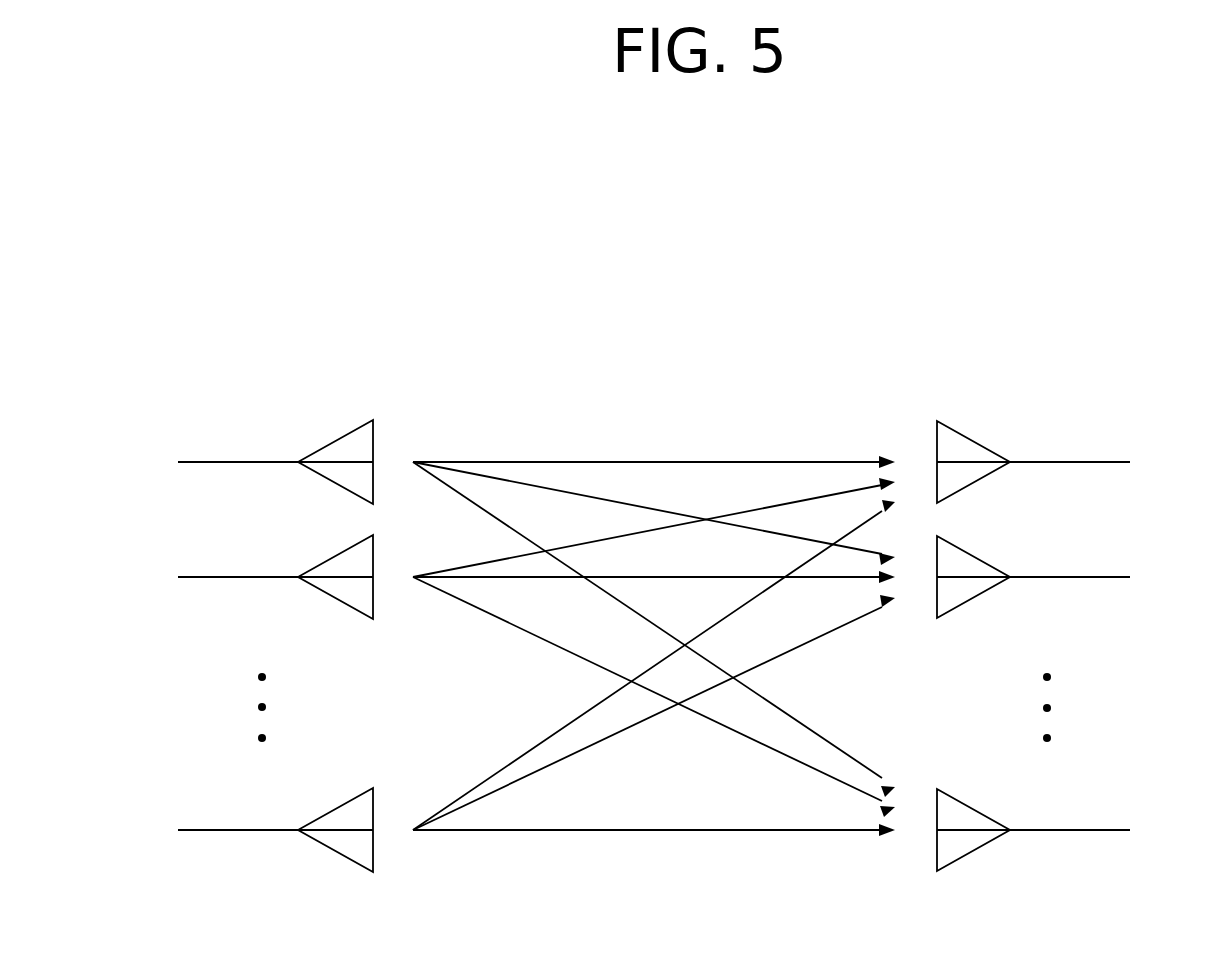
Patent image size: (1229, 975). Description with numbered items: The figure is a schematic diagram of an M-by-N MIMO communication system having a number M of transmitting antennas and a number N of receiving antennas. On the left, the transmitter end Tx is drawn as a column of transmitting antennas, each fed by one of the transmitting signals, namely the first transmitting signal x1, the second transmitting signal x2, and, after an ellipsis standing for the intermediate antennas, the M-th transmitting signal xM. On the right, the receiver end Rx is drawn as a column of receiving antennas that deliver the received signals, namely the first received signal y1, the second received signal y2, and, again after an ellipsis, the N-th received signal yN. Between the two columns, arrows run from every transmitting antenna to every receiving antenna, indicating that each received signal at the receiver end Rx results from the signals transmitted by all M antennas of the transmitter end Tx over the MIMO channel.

The transmitter end Tx is at (295, 534).
The receiver end Rx is at (1022, 534).
The first transmitting signal x1 is at (230, 470).
The second transmitting signal x2 is at (230, 585).
The M-th transmitting signal xM is at (230, 830).
The first received signal y1 is at (1083, 470).
The second received signal y2 is at (1083, 585).
The N-th received signal yN is at (1083, 838).